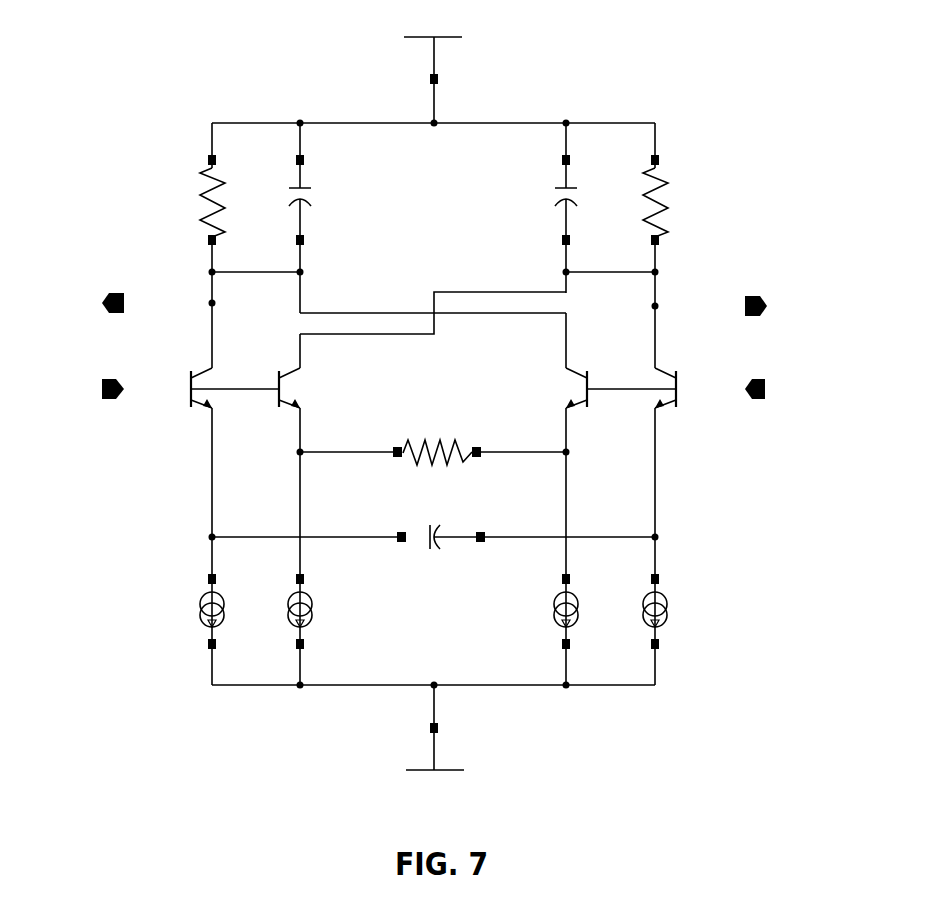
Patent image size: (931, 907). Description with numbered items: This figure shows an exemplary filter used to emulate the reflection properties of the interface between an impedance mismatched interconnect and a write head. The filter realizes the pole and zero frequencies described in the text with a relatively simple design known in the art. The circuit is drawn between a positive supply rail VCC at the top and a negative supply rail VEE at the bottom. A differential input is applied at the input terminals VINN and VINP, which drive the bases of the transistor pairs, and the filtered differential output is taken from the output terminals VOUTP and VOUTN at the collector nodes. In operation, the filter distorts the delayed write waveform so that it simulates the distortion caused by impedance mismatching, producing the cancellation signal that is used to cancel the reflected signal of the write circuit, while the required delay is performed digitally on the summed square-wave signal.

The positive supply terminal VCC is at (433, 65).
The negative supply terminal VEE is at (435, 744).
The positive output terminal VOUTP is at (212, 303).
The negative output terminal VOUTN is at (655, 306).
The negative input terminal VINN is at (191, 389).
The positive input terminal VINP is at (676, 389).